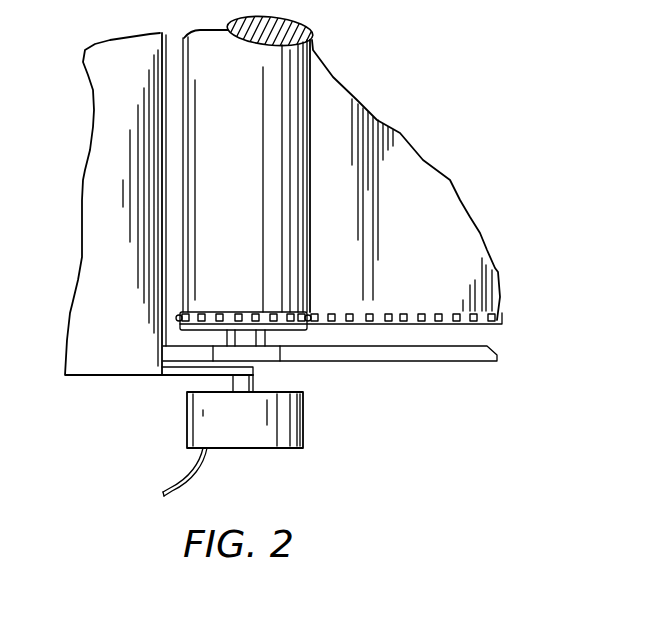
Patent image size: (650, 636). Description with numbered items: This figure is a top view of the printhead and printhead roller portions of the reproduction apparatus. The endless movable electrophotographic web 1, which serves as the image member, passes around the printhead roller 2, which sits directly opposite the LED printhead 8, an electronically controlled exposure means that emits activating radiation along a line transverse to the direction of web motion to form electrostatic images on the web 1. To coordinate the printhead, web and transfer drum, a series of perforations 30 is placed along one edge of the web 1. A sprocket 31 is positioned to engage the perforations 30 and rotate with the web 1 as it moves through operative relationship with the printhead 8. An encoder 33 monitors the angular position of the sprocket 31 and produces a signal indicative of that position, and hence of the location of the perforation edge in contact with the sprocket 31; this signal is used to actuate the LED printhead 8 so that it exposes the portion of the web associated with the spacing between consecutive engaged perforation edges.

The electrophotographic web 1 is at (416, 183).
The printhead roller 2 is at (285, 193).
The LED printhead 8 is at (92, 248).
The perforations 30 is at (437, 313).
The sprocket 31 is at (238, 313).
The encoder 33 is at (303, 412).